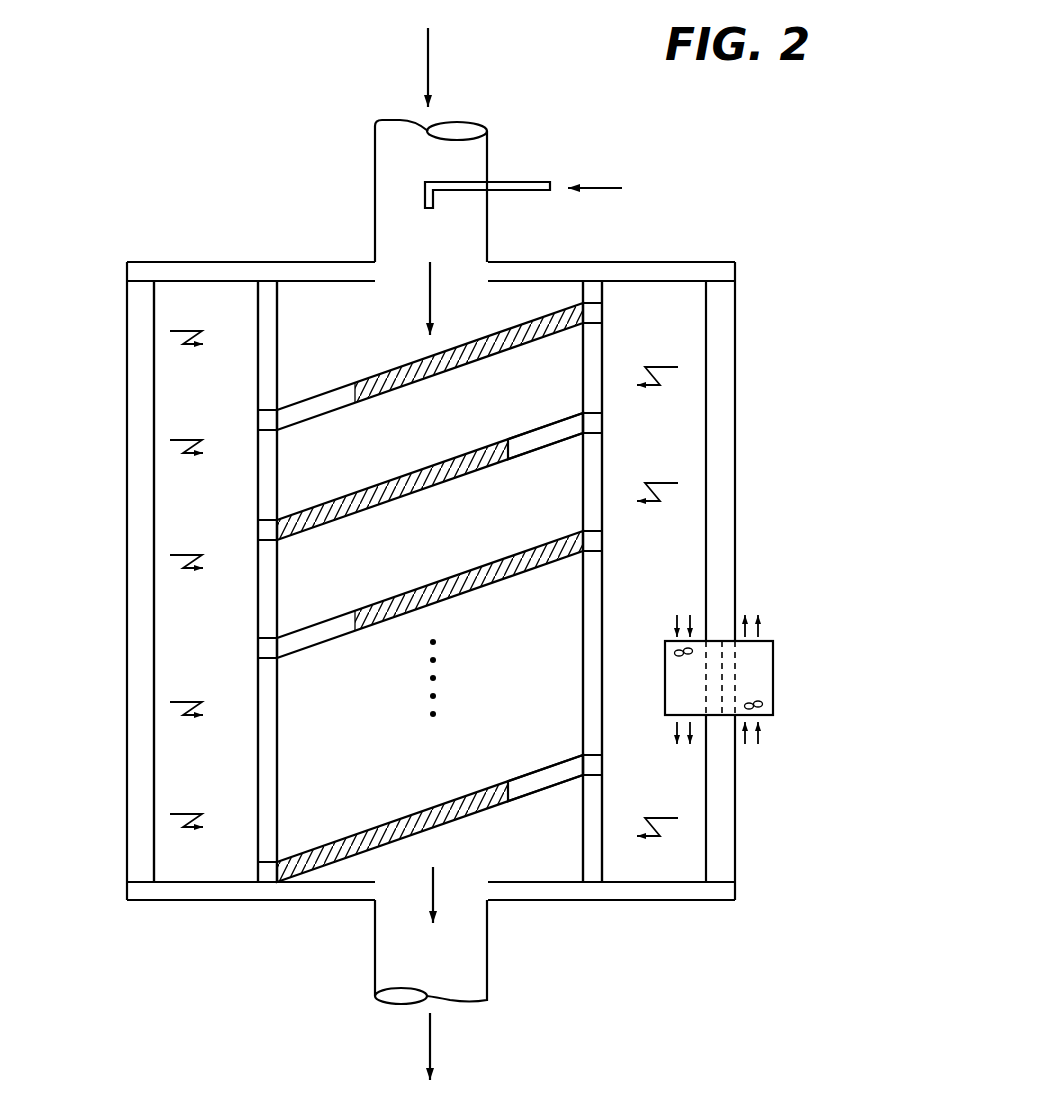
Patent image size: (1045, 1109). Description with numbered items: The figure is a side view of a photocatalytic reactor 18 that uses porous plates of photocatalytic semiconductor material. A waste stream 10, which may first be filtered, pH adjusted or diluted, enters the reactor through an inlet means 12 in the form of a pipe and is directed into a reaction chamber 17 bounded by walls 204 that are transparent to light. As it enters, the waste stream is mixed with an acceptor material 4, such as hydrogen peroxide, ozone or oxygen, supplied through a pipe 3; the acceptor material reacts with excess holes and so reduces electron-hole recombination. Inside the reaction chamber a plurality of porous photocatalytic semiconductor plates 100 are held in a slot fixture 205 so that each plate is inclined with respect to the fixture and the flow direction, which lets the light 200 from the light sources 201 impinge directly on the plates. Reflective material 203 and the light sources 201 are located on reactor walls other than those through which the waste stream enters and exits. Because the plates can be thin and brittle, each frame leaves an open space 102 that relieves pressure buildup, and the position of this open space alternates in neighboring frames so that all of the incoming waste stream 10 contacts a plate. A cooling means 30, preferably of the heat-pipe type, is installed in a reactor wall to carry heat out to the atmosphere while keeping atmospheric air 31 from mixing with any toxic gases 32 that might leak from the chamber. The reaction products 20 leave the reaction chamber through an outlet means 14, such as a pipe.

The waste stream 10 is at (431, 48).
The inlet means 12 is at (375, 190).
The pipe 3 is at (528, 180).
The acceptor material 4 is at (606, 188).
The reactor 18 is at (127, 375).
The reflective material 203 is at (137, 650).
The light 200 is at (190, 555).
The reaction chamber 17 is at (256, 767).
The walls 204 is at (272, 691).
The light sources 201 is at (730, 336).
The slot fixture 205 is at (595, 537).
The porous photocatalytic semiconductor plate 100 is at (398, 478).
The open space 102 is at (536, 438).
The cooling means 30 is at (765, 678).
The atmospheric air 31 is at (751, 677).
The toxic gases 32 is at (679, 679).
The outlet means 14 is at (488, 935).
The reaction products 20 is at (432, 1038).